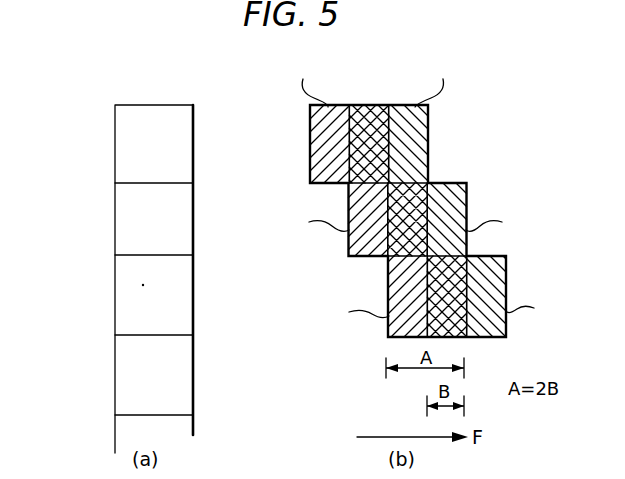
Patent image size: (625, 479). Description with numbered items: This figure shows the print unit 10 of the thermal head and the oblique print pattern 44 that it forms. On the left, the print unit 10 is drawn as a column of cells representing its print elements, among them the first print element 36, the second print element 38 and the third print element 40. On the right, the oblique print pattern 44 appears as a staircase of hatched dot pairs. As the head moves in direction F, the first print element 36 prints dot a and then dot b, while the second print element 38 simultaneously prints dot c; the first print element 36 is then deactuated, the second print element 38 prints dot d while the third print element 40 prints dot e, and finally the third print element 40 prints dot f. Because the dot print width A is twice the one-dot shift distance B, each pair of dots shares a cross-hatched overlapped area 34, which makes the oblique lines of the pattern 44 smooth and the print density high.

The print unit 10 is at (142, 254).
The overlapped area 34 is at (368, 106).
The first print element 36 is at (121, 128).
The second print element 38 is at (121, 213).
The third print element 40 is at (121, 305).
The oblique print pattern 44 is at (419, 215).